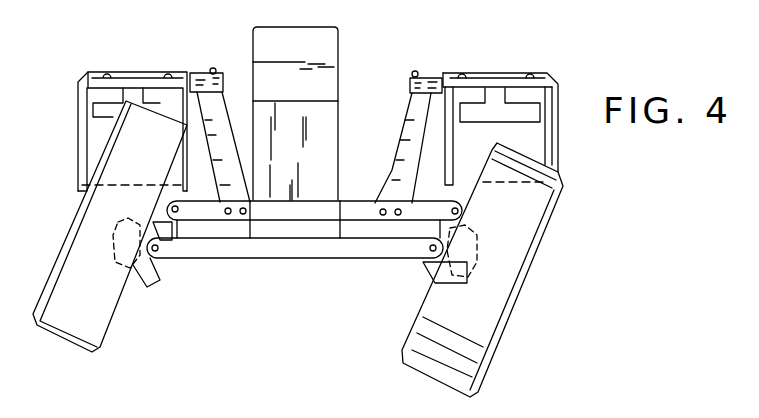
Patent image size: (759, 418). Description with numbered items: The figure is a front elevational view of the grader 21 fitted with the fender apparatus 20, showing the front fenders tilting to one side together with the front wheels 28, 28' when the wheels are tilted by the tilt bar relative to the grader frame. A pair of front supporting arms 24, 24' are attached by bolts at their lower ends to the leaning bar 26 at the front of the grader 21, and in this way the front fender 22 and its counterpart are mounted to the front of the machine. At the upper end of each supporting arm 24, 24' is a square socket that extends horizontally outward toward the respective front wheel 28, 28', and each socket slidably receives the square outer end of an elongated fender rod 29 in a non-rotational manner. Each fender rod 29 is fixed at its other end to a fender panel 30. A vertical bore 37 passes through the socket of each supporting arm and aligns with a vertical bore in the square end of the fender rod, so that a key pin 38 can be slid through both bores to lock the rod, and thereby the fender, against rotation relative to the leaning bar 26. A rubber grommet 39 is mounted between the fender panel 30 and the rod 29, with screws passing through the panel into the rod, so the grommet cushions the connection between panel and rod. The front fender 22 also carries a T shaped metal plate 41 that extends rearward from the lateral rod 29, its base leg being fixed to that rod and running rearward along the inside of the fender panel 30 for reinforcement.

The fender apparatus 20 is at (492, 57).
The grader 21 is at (349, 103).
The front fender 22 is at (341, 72).
The front supporting arm 24 is at (396, 148).
The front supporting arm 24' is at (223, 116).
The leaning bar 26 is at (360, 200).
The front wheel 28 is at (110, 226).
The front wheel 28' is at (495, 270).
The fender rod 29 is at (101, 77).
The fender panel 30 is at (475, 67).
The vertical bore 37 is at (416, 72).
The key pin 38 is at (212, 72).
The rubber grommet 39 is at (170, 77).
The T shaped metal plate 41 is at (98, 122).